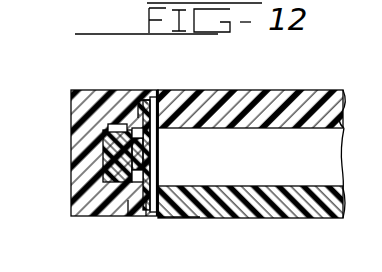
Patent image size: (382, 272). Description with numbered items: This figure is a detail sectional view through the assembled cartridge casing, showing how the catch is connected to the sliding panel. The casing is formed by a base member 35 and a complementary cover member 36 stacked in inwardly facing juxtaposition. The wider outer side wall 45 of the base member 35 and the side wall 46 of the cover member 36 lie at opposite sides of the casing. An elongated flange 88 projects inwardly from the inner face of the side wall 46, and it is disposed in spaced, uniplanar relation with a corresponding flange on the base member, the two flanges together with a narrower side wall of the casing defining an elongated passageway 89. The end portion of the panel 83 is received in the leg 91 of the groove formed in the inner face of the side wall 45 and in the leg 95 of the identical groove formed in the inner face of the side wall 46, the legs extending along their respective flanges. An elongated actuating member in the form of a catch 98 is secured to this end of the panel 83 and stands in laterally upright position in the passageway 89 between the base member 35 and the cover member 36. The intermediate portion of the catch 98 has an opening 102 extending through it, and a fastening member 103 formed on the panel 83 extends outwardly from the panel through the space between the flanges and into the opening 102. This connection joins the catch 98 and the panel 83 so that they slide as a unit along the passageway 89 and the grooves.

The catch 98 is at (78, 135).
The cover member 36 is at (245, 117).
The base member 35 is at (285, 202).
The side wall 46 is at (313, 112).
The side wall 45 is at (335, 206).
The leg 95 is at (157, 100).
The flange 88 is at (130, 125).
The opening 102 is at (108, 133).
The fastening member 103 is at (110, 160).
The passageway 89 is at (133, 208).
The panel 83 is at (152, 210).
The leg 91 is at (185, 214).